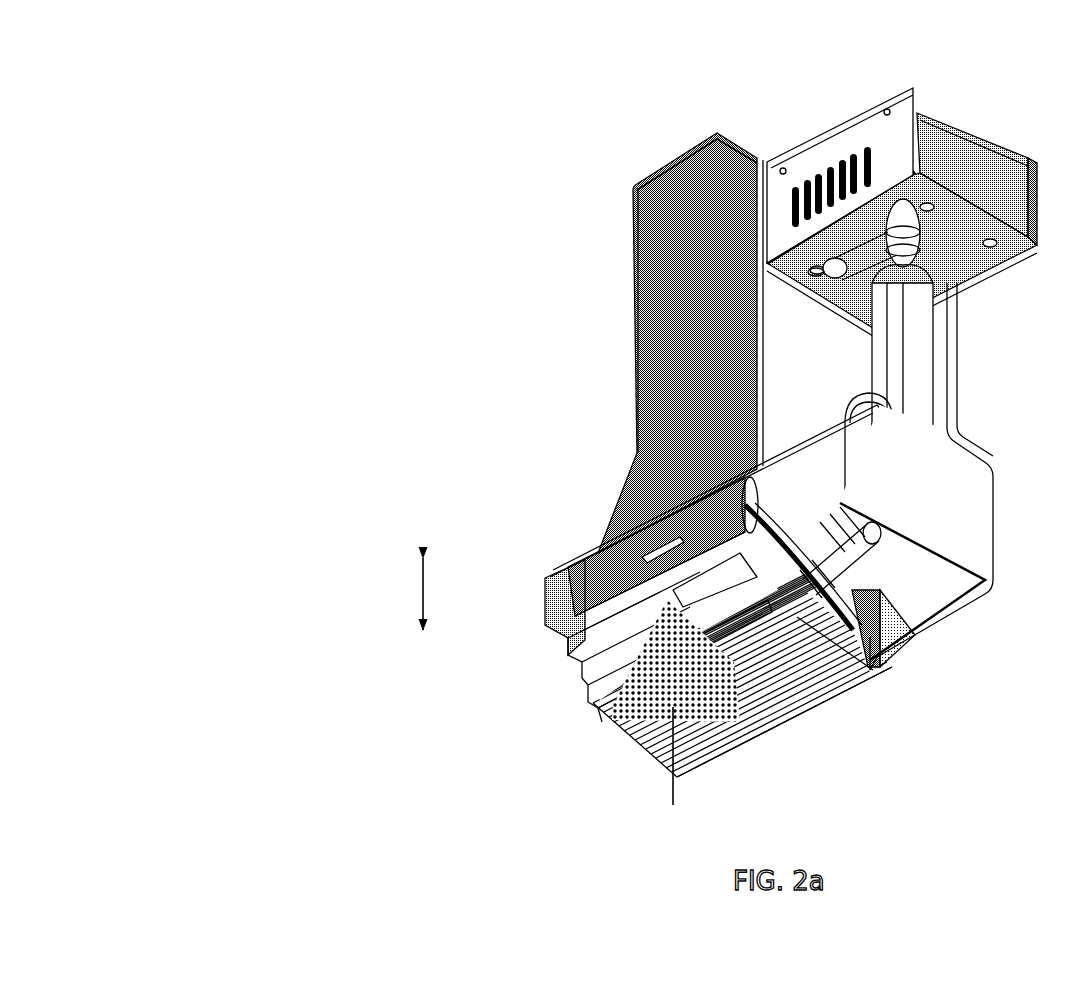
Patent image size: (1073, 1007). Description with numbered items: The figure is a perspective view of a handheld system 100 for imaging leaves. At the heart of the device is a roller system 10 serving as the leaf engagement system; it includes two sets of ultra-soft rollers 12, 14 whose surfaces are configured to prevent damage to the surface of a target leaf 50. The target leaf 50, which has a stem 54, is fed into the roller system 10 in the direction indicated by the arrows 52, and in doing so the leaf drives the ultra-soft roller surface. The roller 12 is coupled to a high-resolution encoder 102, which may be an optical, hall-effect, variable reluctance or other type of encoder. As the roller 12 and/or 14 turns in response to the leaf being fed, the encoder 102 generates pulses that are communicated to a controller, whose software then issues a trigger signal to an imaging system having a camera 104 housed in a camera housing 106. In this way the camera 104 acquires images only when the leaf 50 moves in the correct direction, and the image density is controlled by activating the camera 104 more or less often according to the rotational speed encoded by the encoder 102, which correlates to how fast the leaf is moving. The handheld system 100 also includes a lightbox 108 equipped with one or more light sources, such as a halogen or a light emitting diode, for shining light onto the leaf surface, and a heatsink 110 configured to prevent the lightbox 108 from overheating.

The handheld system 100 is at (172, 190).
The camera 104 is at (710, 250).
The camera housing 106 is at (670, 295).
The roller 12 is at (618, 602).
The roller 14 is at (705, 585).
The roller system 10 is at (572, 555).
The arrows 52 is at (422, 590).
The target leaf 50 is at (658, 665).
The lightbox 108 is at (573, 688).
The heatsink 110 is at (621, 744).
The stem 54 is at (673, 787).
The encoder 102 is at (825, 648).